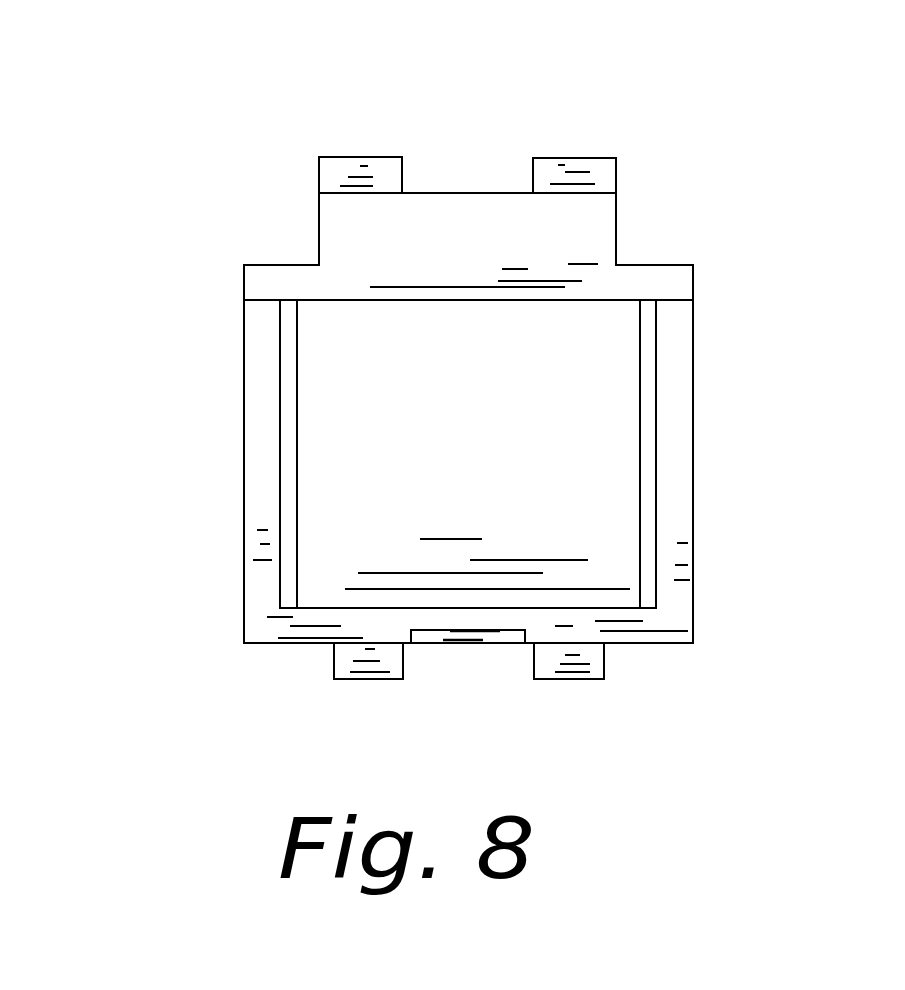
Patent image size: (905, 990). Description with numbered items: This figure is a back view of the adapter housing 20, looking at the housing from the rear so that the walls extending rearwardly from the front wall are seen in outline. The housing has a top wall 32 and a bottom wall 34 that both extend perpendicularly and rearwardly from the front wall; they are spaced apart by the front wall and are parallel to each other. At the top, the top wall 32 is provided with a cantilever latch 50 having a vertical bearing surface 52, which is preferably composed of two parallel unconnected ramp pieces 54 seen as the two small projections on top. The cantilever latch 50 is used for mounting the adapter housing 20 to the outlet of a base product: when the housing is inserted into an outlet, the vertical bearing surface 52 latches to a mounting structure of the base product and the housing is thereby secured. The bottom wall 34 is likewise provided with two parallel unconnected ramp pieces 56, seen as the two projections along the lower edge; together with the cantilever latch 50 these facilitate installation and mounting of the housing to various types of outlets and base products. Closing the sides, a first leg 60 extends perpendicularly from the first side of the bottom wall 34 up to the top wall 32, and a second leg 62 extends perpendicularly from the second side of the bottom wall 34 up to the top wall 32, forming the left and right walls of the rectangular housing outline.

The adapter housing 20 is at (226, 191).
The top wall 32 is at (639, 276).
The bottom wall 34 is at (637, 621).
The cantilever latch 50 is at (443, 213).
The vertical bearing surface 52 is at (583, 172).
The ramp pieces 54 is at (360, 160).
The ramp pieces 56 is at (557, 665).
The first leg 60 is at (673, 420).
The second leg 62 is at (258, 465).